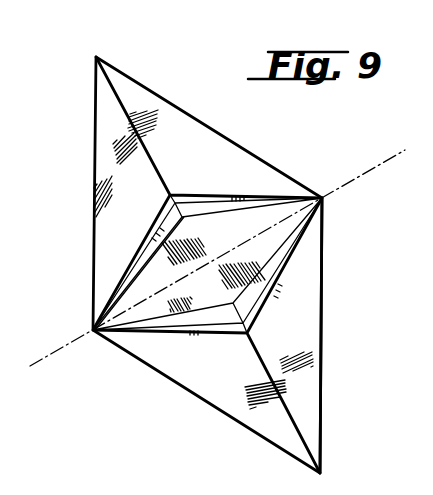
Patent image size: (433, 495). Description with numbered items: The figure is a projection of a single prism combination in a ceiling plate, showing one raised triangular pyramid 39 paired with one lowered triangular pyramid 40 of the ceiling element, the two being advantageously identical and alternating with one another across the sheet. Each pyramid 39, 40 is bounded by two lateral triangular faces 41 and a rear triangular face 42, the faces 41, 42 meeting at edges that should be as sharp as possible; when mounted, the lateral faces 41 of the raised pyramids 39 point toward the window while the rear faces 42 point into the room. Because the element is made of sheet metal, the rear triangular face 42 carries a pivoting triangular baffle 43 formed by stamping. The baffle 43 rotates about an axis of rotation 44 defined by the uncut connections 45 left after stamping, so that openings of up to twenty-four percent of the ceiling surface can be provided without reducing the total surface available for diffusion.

The raised triangular prismatic structure 39 is at (147, 86).
The lowered triangular prismatic structure 40 is at (324, 387).
The lateral triangular face 41 is at (206, 134).
The rear triangular face 42 is at (208, 196).
The pivoting triangular baffle 43 is at (150, 276).
The axis of rotation 44 is at (333, 191).
The uncut connection 45 is at (325, 203).